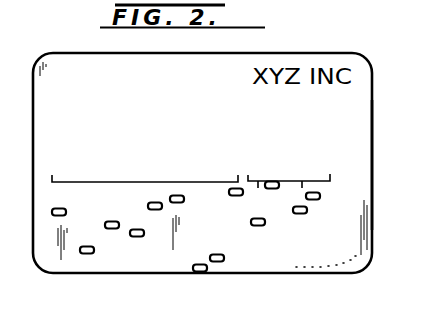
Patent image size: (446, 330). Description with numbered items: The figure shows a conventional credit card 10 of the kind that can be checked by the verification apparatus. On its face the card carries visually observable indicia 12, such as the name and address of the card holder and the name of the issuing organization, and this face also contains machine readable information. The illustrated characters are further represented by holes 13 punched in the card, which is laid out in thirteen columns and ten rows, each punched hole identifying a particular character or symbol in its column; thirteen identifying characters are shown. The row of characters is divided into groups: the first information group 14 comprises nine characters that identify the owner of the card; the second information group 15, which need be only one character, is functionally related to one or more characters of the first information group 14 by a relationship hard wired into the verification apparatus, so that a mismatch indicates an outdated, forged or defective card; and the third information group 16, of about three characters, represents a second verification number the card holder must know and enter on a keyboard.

The credit card 10 is at (325, 53).
The visually observable indicia 12 is at (172, 118).
The holes 13 is at (372, 232).
The first information group 14 is at (155, 181).
The second information group 15 is at (258, 190).
The third information group 16 is at (300, 188).